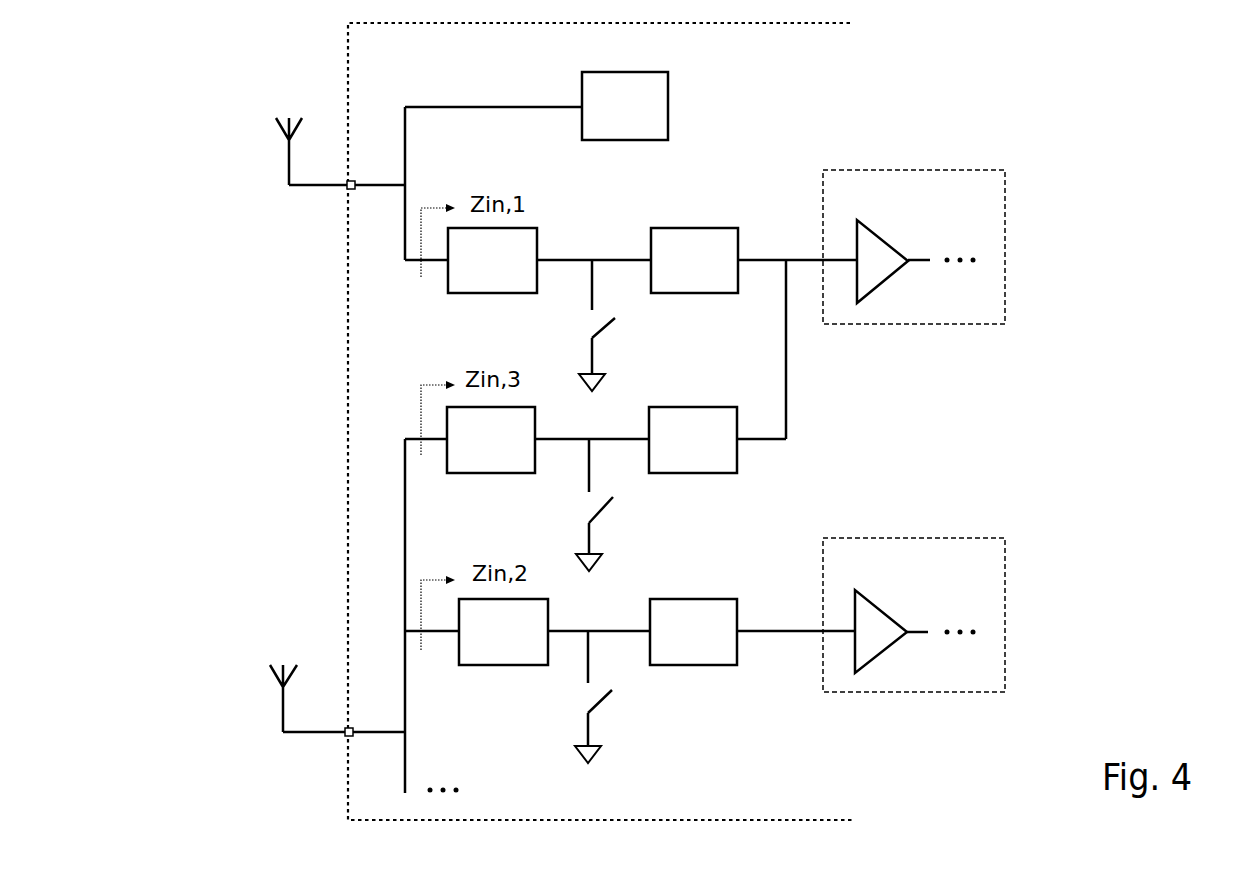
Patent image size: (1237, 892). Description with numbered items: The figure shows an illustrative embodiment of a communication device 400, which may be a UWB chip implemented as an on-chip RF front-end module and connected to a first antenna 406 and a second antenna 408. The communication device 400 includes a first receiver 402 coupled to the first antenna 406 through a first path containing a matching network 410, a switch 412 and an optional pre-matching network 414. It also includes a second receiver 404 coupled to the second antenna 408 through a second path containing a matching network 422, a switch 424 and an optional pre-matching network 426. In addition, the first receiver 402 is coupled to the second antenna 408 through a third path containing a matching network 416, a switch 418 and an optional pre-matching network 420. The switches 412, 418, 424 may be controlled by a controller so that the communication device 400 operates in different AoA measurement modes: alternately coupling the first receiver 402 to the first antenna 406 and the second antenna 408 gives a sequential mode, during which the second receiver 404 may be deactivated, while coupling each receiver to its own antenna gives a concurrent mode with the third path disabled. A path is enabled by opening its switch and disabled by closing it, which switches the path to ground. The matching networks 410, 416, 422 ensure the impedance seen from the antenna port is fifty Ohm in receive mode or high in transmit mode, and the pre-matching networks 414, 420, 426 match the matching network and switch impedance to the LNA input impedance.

The communication device 400 is at (402, 57).
The first receiver 402 is at (928, 168).
The second receiver 404 is at (668, 102).
The first antenna 406 is at (275, 162).
The second antenna 408 is at (272, 706).
The matching network 410 is at (487, 294).
The switch 412 is at (600, 327).
The pre-matching network 414 is at (685, 294).
The matching network 416 is at (493, 473).
The switch 418 is at (598, 508).
The pre-matching network 420 is at (683, 473).
The matching network 422 is at (497, 665).
The switch 424 is at (597, 700).
The pre-matching network 426 is at (683, 665).